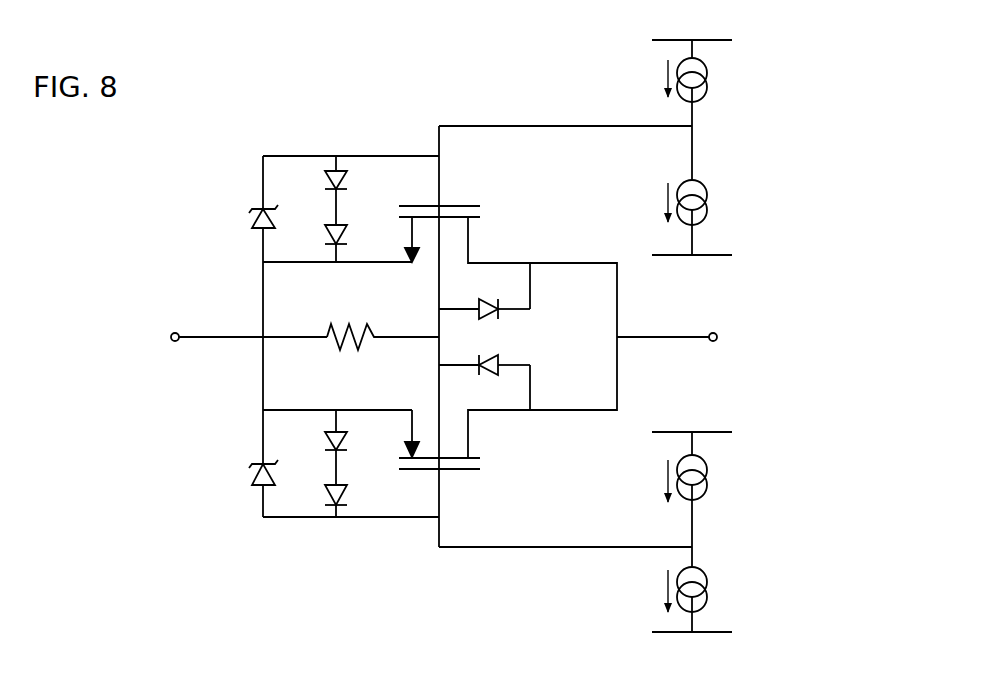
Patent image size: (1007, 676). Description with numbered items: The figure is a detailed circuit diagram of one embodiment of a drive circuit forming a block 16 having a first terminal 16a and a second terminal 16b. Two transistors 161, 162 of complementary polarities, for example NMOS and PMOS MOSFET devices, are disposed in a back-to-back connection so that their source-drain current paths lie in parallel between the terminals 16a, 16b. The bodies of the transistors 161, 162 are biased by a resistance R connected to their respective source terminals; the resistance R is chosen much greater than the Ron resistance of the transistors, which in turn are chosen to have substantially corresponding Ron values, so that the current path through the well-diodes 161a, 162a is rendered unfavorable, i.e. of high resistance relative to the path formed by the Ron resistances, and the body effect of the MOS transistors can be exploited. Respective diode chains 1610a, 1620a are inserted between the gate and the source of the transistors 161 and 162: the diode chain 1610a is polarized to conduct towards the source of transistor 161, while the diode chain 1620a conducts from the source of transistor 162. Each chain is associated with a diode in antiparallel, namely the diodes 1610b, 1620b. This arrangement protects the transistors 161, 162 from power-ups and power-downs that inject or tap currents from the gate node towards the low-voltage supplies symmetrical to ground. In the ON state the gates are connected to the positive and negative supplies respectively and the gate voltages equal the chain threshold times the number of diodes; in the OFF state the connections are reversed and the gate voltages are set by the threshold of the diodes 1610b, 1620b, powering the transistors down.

The block 16 is at (244, 112).
The terminal 16a is at (180, 329).
The terminal 16b is at (721, 330).
The transistor 161 is at (477, 198).
The transistor 162 is at (472, 477).
The well-diode 161a is at (502, 318).
The well-diode 162a is at (502, 356).
The diode chain 1610a is at (353, 210).
The diode 1610b is at (252, 217).
The diode chain 1620a is at (355, 467).
The diode 1620b is at (253, 480).
The resistance R is at (357, 324).